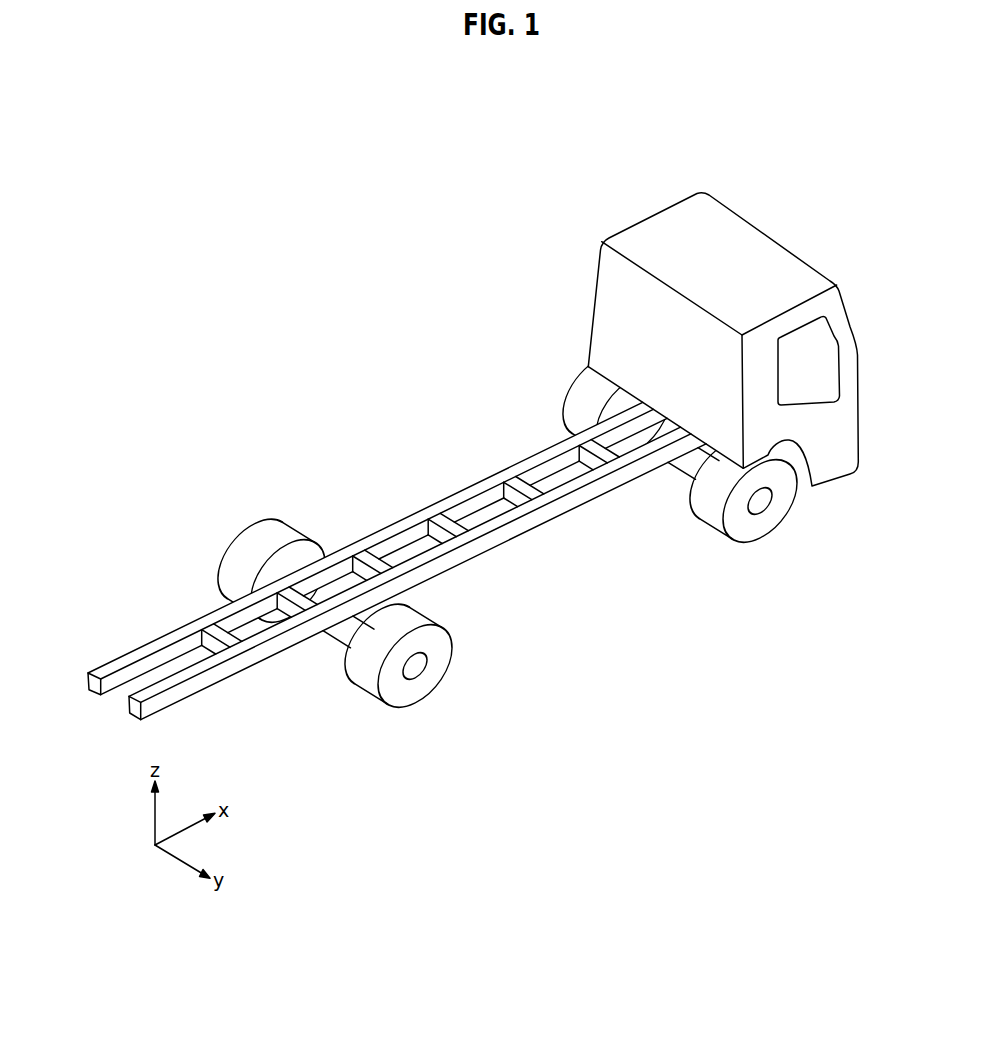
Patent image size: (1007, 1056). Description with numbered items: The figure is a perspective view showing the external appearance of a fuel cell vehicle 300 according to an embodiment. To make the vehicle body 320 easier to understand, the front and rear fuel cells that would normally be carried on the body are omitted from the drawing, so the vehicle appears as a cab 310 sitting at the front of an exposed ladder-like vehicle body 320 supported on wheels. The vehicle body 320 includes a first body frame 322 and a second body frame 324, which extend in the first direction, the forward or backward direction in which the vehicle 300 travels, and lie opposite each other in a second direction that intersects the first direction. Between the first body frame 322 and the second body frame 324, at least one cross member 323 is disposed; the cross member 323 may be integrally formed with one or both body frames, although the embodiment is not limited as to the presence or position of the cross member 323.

The fuel cell vehicle 300 is at (783, 152).
The cab 310 is at (850, 407).
The vehicle body 320 is at (482, 422).
The first body frame 322 is at (390, 532).
The cross member 323 is at (451, 520).
The second body frame 324 is at (507, 518).